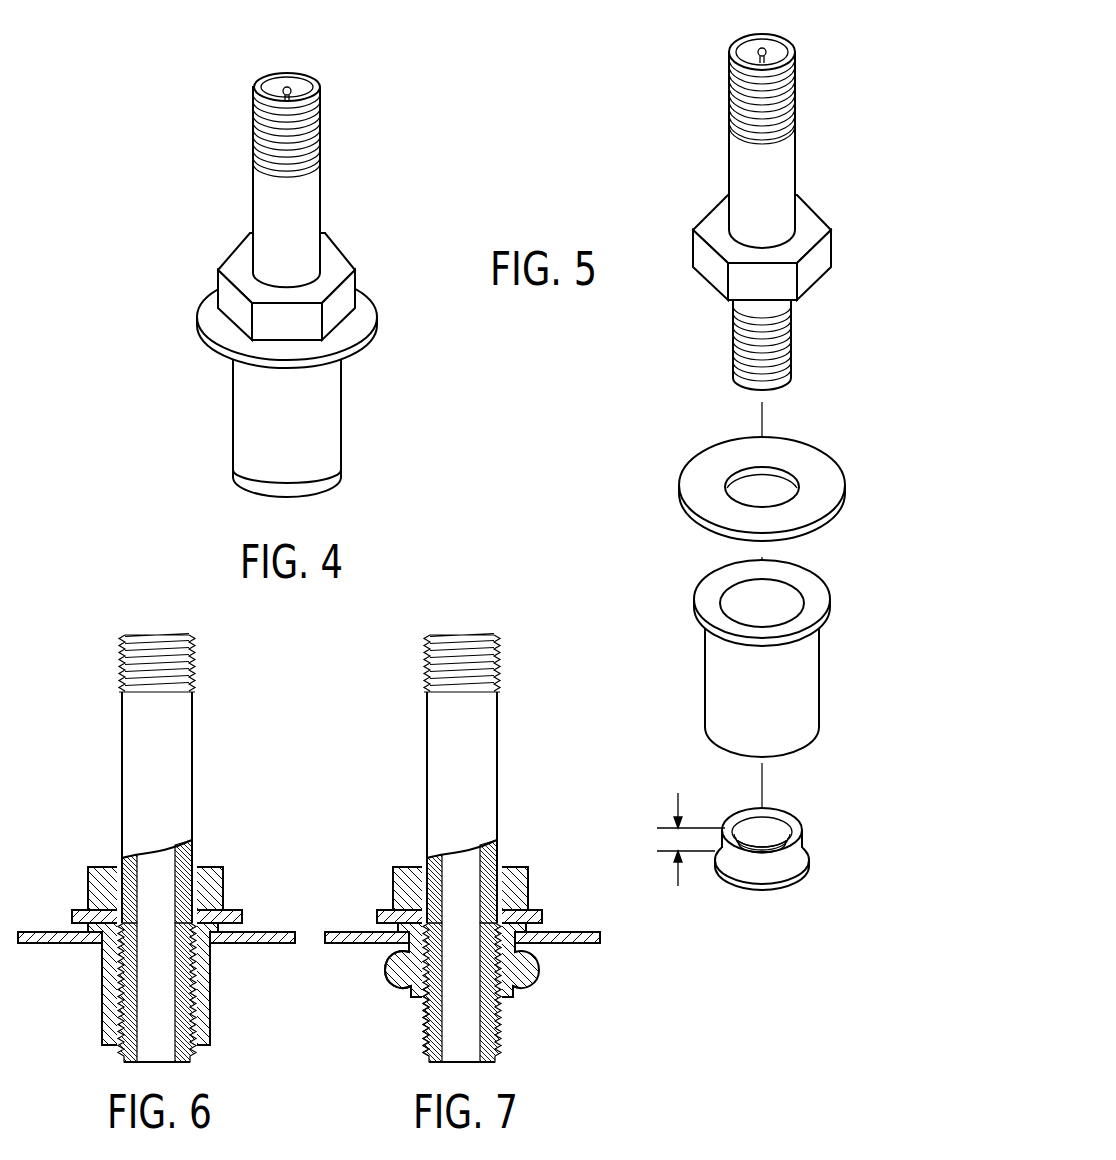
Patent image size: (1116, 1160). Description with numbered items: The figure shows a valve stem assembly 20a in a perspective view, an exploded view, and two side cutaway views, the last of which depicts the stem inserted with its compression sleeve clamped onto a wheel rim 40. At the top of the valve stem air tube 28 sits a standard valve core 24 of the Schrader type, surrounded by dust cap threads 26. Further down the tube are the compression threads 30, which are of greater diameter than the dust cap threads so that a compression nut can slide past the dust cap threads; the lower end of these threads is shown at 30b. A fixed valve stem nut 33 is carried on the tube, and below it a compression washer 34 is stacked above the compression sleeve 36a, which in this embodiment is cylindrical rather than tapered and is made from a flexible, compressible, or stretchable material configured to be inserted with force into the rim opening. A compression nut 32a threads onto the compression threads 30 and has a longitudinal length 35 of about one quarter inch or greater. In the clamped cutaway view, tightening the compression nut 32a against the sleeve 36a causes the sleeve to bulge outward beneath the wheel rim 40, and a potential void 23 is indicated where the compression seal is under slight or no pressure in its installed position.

In FIG. 4, the valve stem assembly 20a is at (178, 211).
In FIG. 5, the valve stem assembly 20a is at (657, 0).
In FIG. 6, the valve stem assembly 20a is at (73, 743).
In FIG. 7, the valve stem assembly 20a is at (472, 855).
In FIG. 7, the potential void 23 is at (372, 982).
In FIG. 4, the valve core 24 is at (291, 90).
In FIG. 5, the valve core 24 is at (767, 50).
In FIG. 4, the dust cap threads 26 is at (321, 125).
In FIG. 5, the dust cap threads 26 is at (797, 85).
In FIG. 6, the dust cap threads 26 is at (192, 661).
In FIG. 7, the dust cap threads 26 is at (503, 655).
In FIG. 4, the valve stem air tube 28 is at (308, 194).
In FIG. 5, the valve stem air tube 28 is at (785, 167).
In FIG. 6, the valve stem air tube 28 is at (192, 775).
In FIG. 7, the valve stem air tube 28 is at (505, 877).
In FIG. 5, the compression threads 30 is at (733, 328).
In FIG. 6, the compression threads 30 is at (117, 982).
In FIG. 7, the compression threads 30 is at (524, 992).
In FIG. 7, the lower thread end portion 30b is at (384, 1038).
In FIG. 4, the threaded collar / grommet bottom 32a is at (252, 488).
In FIG. 5, the threaded collar / grommet bottom 32a is at (792, 855).
In FIG. 6, the threaded collar / grommet bottom 32a is at (102, 1047).
In FIG. 7, the threaded collar / grommet bottom 32a is at (488, 1039).
In FIG. 4, the fixed valve stem nut 33 is at (228, 293).
In FIG. 5, the fixed valve stem nut 33 is at (832, 253).
In FIG. 6, the fixed valve stem nut 33 is at (88, 892).
In FIG. 7, the fixed valve stem nut 33 is at (430, 859).
In FIG. 5, the compression washer 34 is at (837, 478).
In FIG. 5, the compression nut longitudinal length 35 is at (691, 828).
In FIG. 4, the grommet sleeve 36a is at (317, 437).
In FIG. 5, the grommet sleeve 36a is at (802, 698).
In FIG. 6, the grommet sleeve 36a is at (212, 978).
In FIG. 7, the grommet sleeve 36a is at (491, 979).
In FIG. 6, the wheel rim 40 is at (67, 945).
In FIG. 7, the wheel rim 40 is at (466, 890).